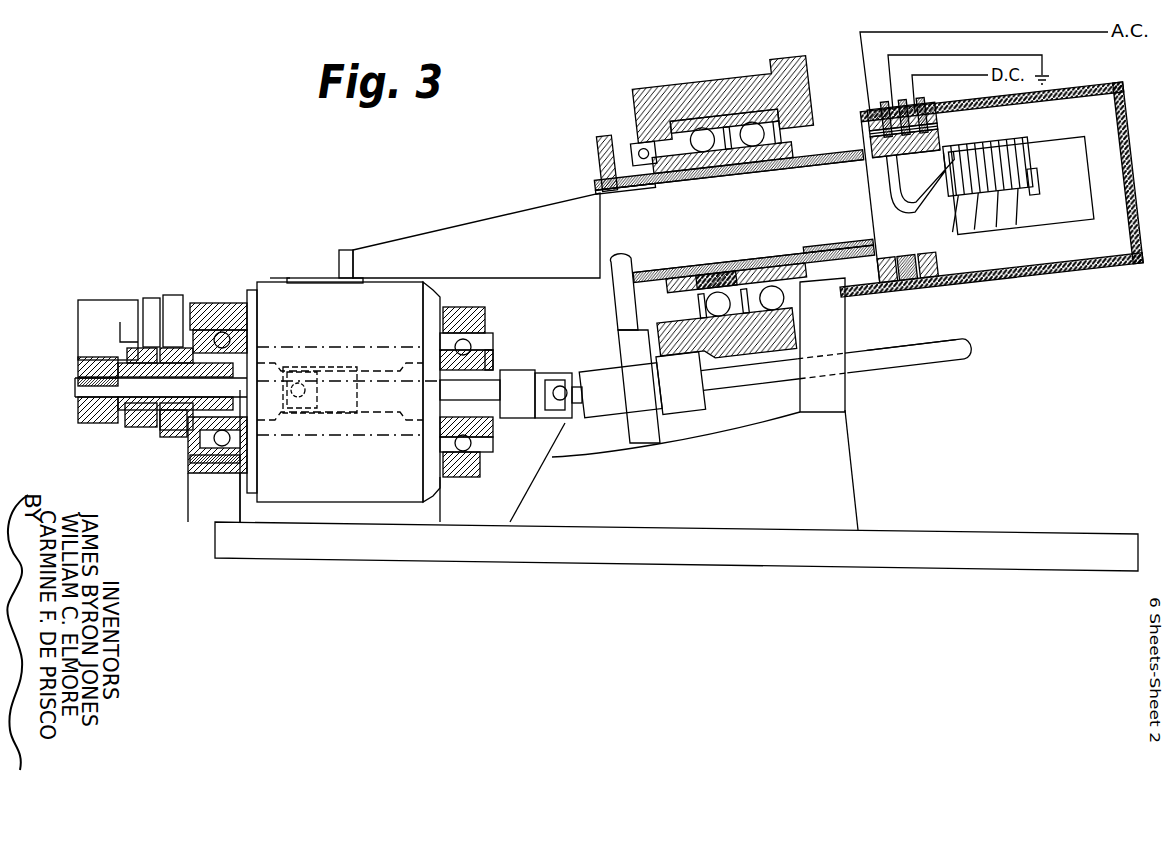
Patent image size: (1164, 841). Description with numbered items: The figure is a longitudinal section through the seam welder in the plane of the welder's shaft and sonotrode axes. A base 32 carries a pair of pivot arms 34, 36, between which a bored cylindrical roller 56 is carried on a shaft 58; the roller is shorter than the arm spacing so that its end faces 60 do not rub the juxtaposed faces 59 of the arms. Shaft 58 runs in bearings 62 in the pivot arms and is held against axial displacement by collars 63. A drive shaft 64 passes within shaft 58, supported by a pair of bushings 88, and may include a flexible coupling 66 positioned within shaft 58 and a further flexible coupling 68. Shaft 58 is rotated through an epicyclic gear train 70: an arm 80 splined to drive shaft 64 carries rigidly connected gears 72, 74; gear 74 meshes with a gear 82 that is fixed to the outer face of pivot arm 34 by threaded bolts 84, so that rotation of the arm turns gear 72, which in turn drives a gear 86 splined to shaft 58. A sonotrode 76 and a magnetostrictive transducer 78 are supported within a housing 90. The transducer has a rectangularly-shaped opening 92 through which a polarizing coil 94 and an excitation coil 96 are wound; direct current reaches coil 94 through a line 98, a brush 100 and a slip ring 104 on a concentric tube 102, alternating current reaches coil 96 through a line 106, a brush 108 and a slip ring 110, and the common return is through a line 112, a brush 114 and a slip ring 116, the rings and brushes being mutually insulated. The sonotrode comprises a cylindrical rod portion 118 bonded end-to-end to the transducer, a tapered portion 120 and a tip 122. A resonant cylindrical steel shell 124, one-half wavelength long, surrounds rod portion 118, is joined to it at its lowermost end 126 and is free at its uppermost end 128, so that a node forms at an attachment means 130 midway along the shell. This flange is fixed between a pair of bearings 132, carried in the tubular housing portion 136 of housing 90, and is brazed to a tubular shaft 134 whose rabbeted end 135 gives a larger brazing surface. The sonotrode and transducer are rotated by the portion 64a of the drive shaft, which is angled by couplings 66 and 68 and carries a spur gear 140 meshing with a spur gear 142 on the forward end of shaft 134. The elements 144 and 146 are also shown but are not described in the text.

The base 32 is at (1017, 533).
The pivot arm 34 is at (223, 473).
The pivot arm 36 is at (483, 466).
The roller 56 is at (420, 293).
The shaft 58 is at (157, 430).
The juxtaposed faces 59 is at (253, 296).
The end faces 60 is at (433, 487).
The bearings 62 is at (227, 303).
The collars 63 is at (200, 317).
The drive shaft 64 is at (80, 391).
The portion of drive shaft 64a is at (945, 354).
The flexible coupling 66 is at (268, 373).
The flexible coupling 68 is at (522, 374).
The epicyclic gear train 70 is at (153, 293).
The gear 72 is at (142, 302).
The epicyclic gear 74 is at (173, 296).
The sonotrode 76 is at (507, 215).
The transducer 78 is at (1073, 214).
The arm 80 is at (93, 315).
The gear 82 is at (173, 438).
The threaded bolts 84 is at (188, 447).
The gear 86 is at (140, 432).
The bushings 88 is at (120, 422).
The housing 90 is at (1083, 270).
The rectangularly-shaped opening 92 is at (1035, 185).
The polarizing coil 94 is at (1020, 147).
The excitation coil 96 is at (993, 234).
The line 98 is at (953, 75).
The brush 100 is at (920, 124).
The concentric tube 102 is at (956, 134).
The slip ring 104 is at (928, 272).
The line 106 is at (1080, 35).
The brush 108 is at (870, 122).
The slip ring 110 is at (887, 272).
The line 112 is at (983, 53).
The brush 114 is at (897, 112).
The slip ring 116 is at (907, 272).
The cylindrical rod portion 118 is at (612, 278).
The tapered portion 120 is at (431, 238).
The tip 122 is at (348, 250).
The cylindrical steel shell 124 is at (600, 181).
The lowermost end 126 is at (600, 195).
The uppermost end 128 is at (857, 248).
The attachment means 130 is at (738, 275).
The bearings 132 is at (700, 138).
The tubular shaft 134 is at (630, 150).
The end of shaft 135 is at (725, 165).
The tubular housing portion 136 is at (732, 90).
The spur gear 140 is at (645, 426).
The spur gear 142 is at (600, 145).
The strip 144 is at (317, 278).
The strip end 146 is at (275, 278).